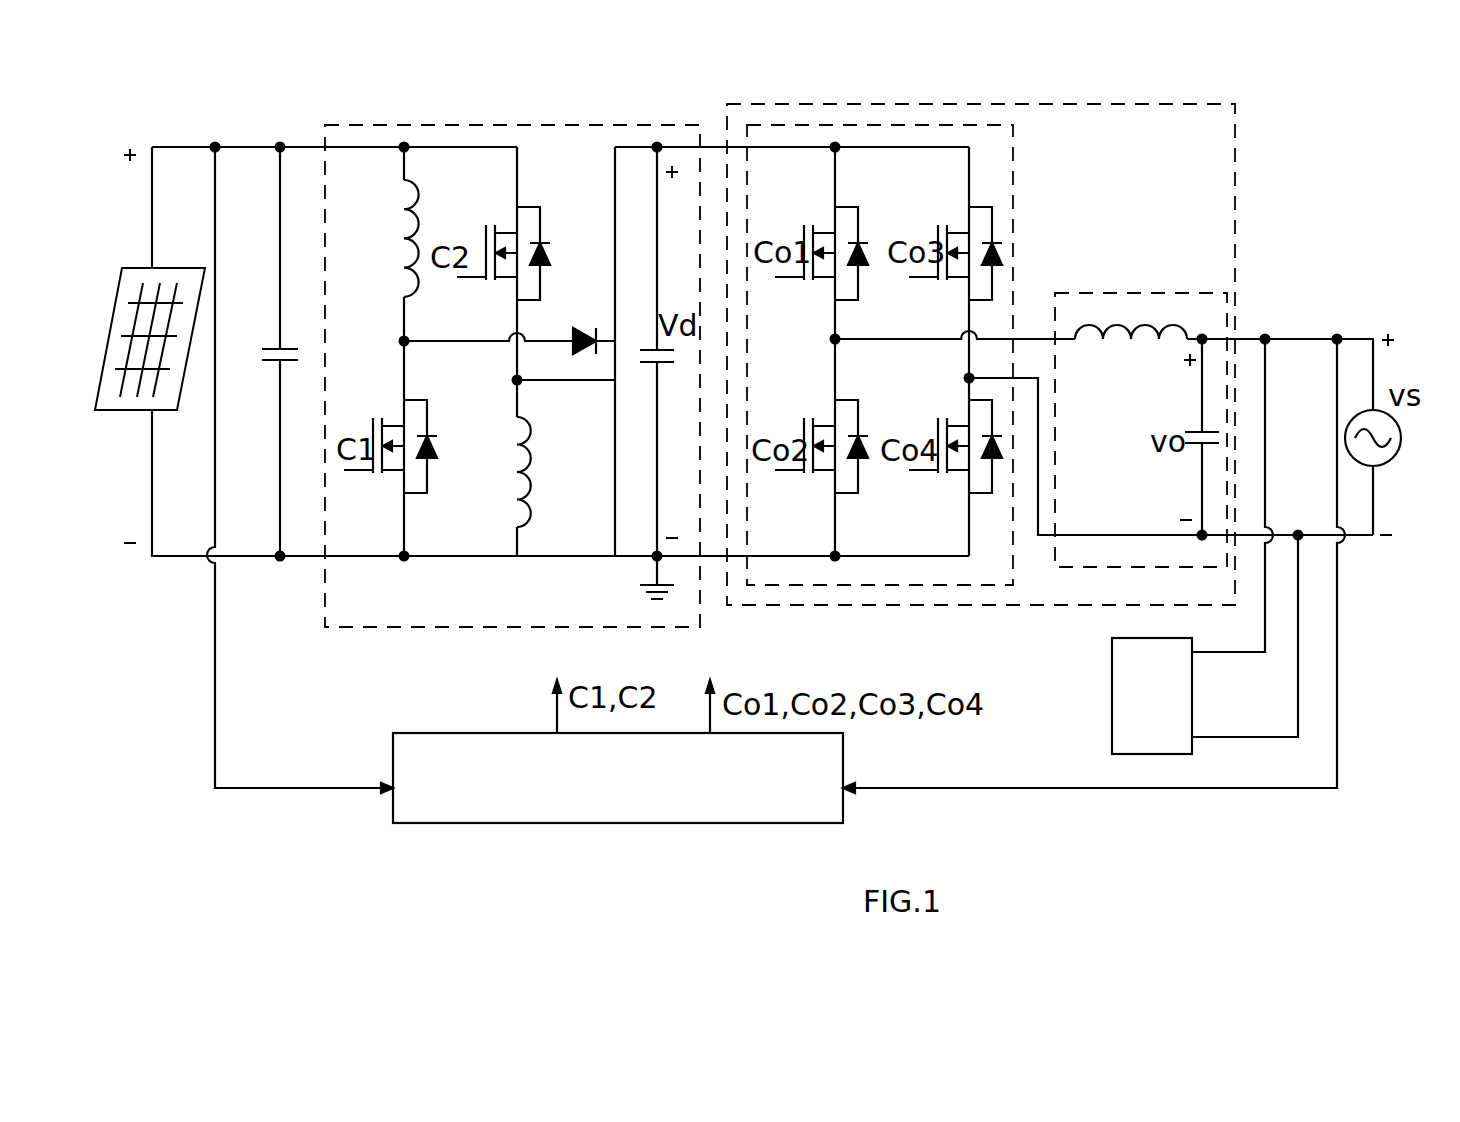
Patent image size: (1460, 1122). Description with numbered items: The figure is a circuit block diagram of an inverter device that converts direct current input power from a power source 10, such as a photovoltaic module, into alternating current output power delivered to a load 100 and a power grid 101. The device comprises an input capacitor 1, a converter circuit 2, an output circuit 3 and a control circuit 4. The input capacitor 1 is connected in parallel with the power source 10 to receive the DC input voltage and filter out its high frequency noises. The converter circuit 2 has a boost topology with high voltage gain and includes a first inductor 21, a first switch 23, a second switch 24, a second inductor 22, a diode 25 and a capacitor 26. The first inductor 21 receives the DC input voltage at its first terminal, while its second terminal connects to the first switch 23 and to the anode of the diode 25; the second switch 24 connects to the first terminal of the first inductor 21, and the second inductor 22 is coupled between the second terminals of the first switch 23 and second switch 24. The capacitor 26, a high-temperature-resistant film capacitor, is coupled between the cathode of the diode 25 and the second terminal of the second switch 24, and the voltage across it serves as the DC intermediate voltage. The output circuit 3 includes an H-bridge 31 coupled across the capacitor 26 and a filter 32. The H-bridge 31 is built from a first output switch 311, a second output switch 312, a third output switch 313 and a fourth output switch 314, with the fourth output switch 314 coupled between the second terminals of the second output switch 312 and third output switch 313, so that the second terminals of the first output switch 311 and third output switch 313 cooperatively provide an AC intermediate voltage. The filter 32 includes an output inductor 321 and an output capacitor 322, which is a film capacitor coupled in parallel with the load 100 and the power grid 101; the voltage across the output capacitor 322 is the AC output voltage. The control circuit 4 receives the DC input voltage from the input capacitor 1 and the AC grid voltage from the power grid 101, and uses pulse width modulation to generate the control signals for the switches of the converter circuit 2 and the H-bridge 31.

The input capacitor 1 is at (272, 362).
The converter circuit 2 is at (565, 124).
The output circuit 3 is at (1128, 104).
The control circuit 4 is at (442, 733).
The power source 10 is at (115, 412).
The first inductor 21 is at (402, 240).
The second inductor 22 is at (519, 452).
The first switch 23 is at (375, 430).
The second switch 24 is at (485, 237).
The diode 25 is at (583, 327).
The capacitor 26 is at (650, 363).
The H-bridge 31 is at (937, 124).
The filter 32 is at (1167, 293).
The load 100 is at (1112, 689).
The power grid 101 is at (1398, 461).
The first output switch 311 is at (803, 233).
The second output switch 312 is at (803, 423).
The third output switch 313 is at (937, 233).
The fourth output switch 314 is at (937, 423).
The output inductor 321 is at (1132, 350).
The output capacitor 322 is at (1195, 446).